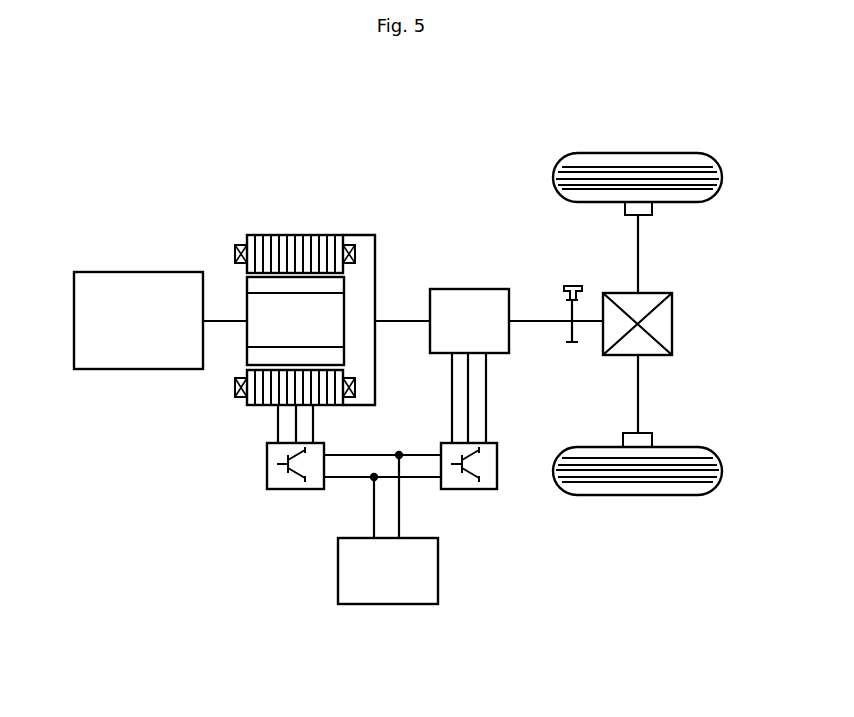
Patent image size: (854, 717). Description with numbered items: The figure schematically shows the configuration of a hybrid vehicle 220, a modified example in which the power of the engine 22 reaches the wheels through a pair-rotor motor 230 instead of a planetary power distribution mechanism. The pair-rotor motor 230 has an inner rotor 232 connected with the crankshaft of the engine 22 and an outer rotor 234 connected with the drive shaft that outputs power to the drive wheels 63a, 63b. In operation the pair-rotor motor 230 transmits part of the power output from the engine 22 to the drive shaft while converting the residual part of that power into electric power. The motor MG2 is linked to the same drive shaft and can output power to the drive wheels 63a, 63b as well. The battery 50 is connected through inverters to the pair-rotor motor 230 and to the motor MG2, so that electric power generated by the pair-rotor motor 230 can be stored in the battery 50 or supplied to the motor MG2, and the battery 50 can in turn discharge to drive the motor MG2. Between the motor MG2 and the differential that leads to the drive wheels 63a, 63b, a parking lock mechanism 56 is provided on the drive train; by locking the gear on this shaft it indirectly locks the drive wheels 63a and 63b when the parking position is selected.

The engine 22 is at (137, 369).
The battery 50 is at (438, 571).
The parking lock mechanism 56 is at (573, 278).
The drive wheel 63a is at (638, 153).
The drive wheel 63b is at (637, 495).
The hybrid vehicle 220 is at (433, 131).
The pair-rotor motor 230 is at (300, 142).
The inner rotor 232 is at (245, 306).
The outer rotor 234 is at (297, 236).
The motor MG2 is at (469, 289).